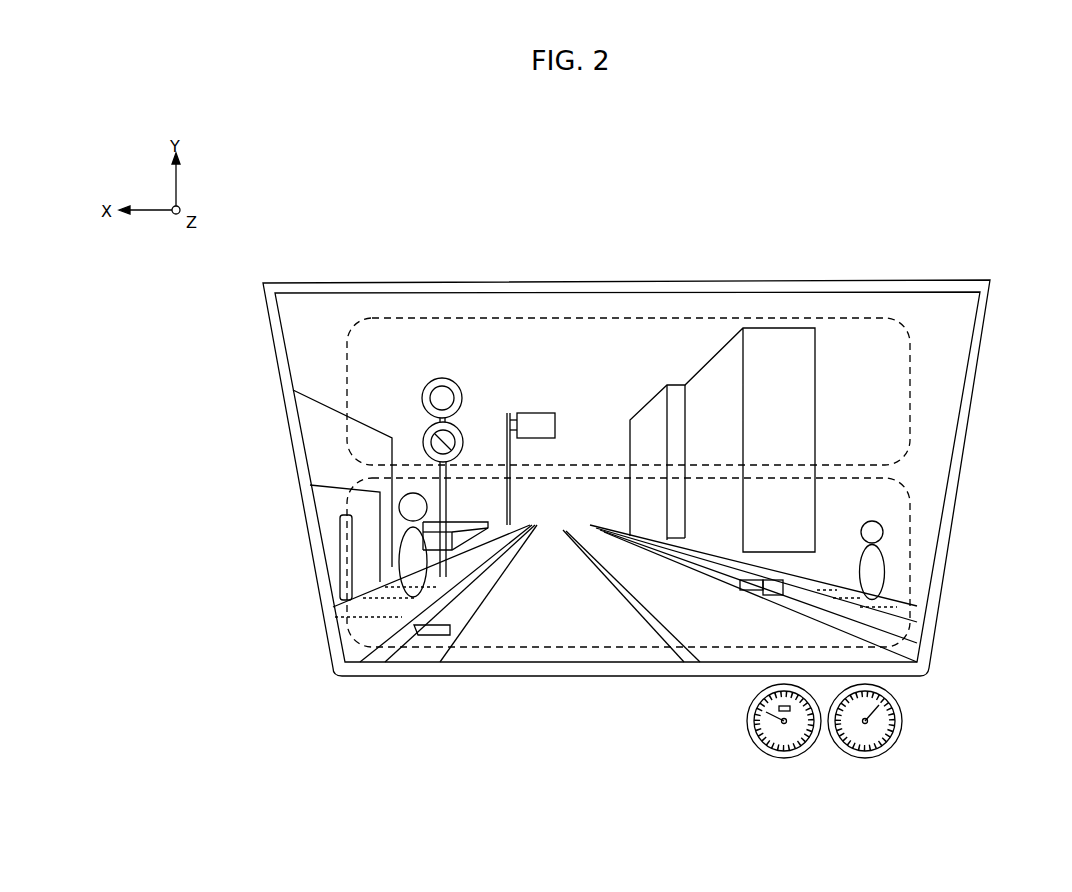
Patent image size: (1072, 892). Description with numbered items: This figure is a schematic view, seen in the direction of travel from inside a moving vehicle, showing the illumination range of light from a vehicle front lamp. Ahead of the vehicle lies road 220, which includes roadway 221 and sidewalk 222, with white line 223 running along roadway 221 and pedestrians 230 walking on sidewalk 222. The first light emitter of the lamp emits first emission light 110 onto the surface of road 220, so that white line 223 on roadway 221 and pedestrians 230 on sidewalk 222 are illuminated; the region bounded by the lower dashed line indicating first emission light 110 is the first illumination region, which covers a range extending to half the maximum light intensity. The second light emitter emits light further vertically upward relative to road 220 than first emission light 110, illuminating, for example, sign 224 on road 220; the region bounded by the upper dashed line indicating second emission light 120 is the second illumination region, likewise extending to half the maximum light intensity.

The first emission light 110 is at (910, 512).
The second emission light 120 is at (910, 355).
The road 220 is at (503, 738).
The roadway 221 is at (510, 612).
The sidewalk 222 is at (350, 643).
The white line 223 is at (657, 628).
The sign 224 is at (423, 385).
The pedestrians 230 is at (400, 520).